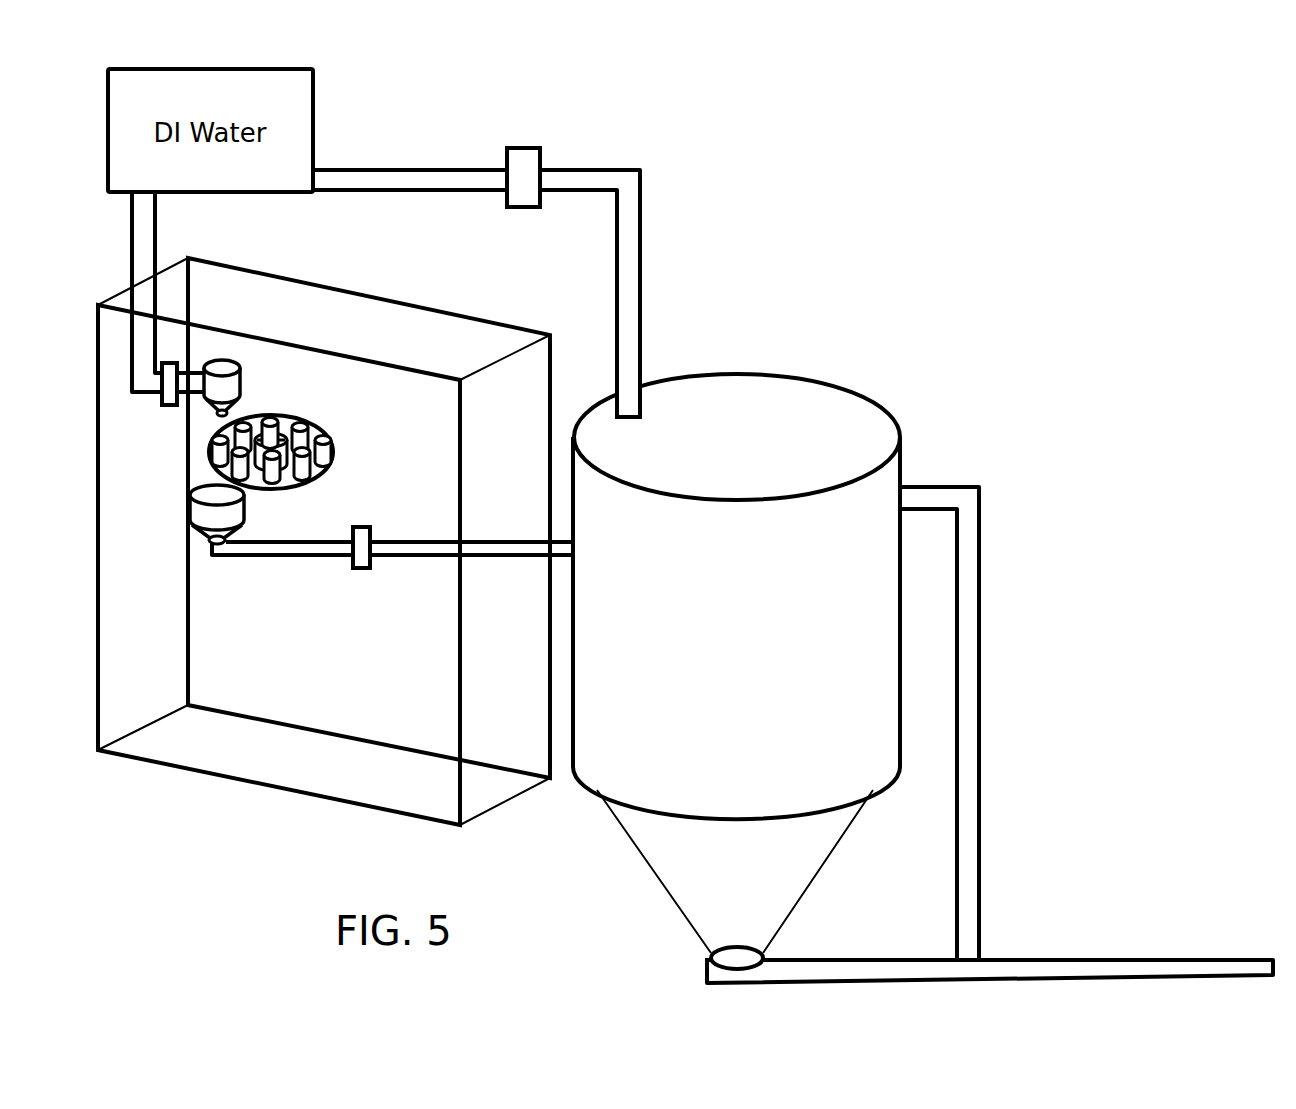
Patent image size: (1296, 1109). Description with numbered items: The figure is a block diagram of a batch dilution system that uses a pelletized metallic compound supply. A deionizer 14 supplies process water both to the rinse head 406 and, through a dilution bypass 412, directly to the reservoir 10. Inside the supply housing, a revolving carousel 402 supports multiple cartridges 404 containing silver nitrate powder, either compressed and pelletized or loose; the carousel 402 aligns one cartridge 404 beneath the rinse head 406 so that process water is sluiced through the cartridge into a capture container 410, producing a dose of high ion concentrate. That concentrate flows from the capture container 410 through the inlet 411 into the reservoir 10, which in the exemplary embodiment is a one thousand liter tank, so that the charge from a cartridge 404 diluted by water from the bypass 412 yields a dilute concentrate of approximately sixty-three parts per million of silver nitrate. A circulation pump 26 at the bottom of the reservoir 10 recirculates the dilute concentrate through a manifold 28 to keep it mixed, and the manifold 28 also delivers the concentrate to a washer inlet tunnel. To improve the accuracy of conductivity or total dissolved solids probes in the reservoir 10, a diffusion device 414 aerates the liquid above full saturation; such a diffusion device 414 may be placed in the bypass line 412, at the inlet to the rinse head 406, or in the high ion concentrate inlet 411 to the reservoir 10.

The reservoir 10 is at (725, 412).
The deionizer 14 is at (324, 523).
The circulation pump 26 is at (735, 958).
The manifold 28 is at (838, 970).
The revolving carousel 402 is at (302, 418).
The cartridges 404 is at (318, 478).
The rinse head 406 is at (236, 388).
The capture container 410 is at (237, 515).
The inlet 411 is at (443, 548).
The dilution bypass 412 is at (386, 262).
The diffusion device 414 is at (327, 624).